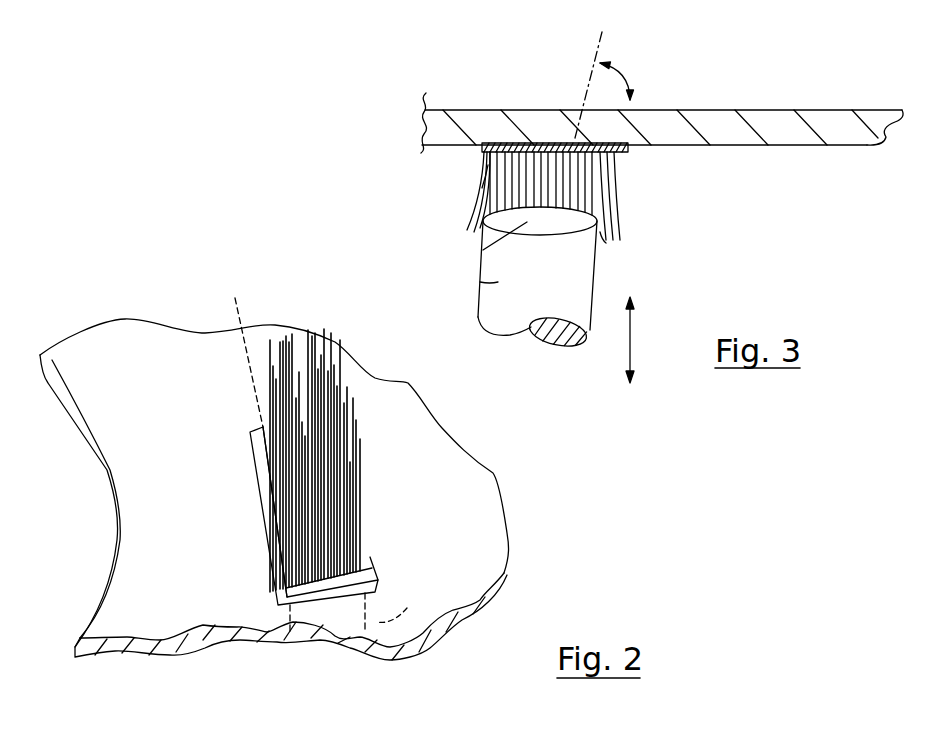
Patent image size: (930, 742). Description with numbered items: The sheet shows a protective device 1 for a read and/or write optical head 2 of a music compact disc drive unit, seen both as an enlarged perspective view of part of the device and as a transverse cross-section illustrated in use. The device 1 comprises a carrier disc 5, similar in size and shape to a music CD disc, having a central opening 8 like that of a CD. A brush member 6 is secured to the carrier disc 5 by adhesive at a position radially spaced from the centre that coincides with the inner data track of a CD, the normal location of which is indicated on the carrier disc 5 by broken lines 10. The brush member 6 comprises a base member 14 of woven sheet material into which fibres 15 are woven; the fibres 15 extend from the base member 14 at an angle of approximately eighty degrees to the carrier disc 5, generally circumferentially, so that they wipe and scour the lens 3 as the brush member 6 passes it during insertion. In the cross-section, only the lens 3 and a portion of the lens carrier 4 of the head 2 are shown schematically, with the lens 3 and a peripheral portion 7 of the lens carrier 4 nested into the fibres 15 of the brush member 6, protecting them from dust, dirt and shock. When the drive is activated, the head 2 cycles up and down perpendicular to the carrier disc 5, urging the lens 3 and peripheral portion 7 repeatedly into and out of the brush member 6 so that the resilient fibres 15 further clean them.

In FIG. 3, the protective device 1 is at (770, 212).
In FIG. 3, the read and/or write optical head 2 is at (500, 302).
In FIG. 3, the lens 3 is at (483, 250).
In FIG. 3, the lens carrier 4 is at (480, 282).
In FIG. 3, the carrier disc 5 is at (808, 111).
In FIG. 2, the carrier disc 5 is at (480, 478).
In FIG. 3, the brush member 6 is at (605, 182).
In FIG. 2, the brush member 6 is at (283, 540).
In FIG. 3, the peripheral portion 7 is at (600, 232).
In FIG. 2, the central opening 8 is at (75, 413).
In FIG. 2, the broken lines 10 is at (330, 450).
In FIG. 3, the base member 14 is at (478, 146).
In FIG. 2, the base member 14 is at (280, 612).
In FIG. 3, the fibres 15 is at (482, 188).
In FIG. 2, the fibres 15 is at (375, 557).